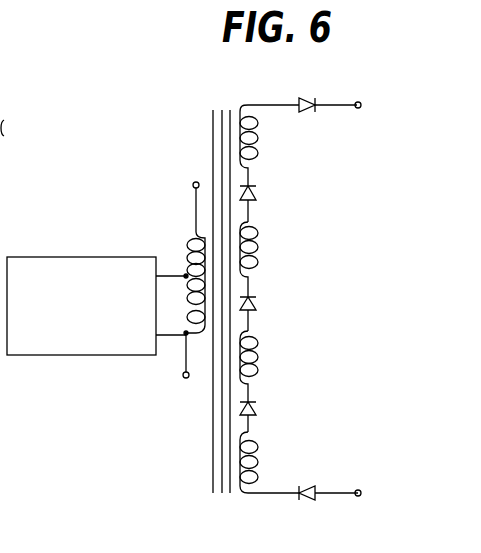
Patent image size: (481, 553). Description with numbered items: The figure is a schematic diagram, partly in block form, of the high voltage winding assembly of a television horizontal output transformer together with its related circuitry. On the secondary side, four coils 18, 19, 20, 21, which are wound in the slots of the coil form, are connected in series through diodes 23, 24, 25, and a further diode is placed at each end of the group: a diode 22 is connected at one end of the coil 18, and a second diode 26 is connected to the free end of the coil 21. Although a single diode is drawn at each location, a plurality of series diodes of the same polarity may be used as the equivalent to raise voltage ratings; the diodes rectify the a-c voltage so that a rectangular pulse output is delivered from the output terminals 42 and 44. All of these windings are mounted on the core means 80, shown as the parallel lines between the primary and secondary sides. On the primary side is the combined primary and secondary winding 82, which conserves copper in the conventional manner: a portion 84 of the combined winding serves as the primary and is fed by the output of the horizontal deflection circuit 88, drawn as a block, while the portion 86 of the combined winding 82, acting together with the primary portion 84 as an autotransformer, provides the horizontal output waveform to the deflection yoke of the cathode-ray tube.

The coil 18 is at (258, 150).
The coil 19 is at (258, 250).
The coil 20 is at (258, 357).
The coil 21 is at (258, 465).
The diode 22 is at (311, 97).
The diode 23 is at (257, 196).
The diode 24 is at (257, 305).
The diode 25 is at (258, 410).
The diode 26 is at (311, 500).
The output terminal 42 is at (358, 101).
The output terminal 44 is at (358, 490).
The core means 80 is at (212, 136).
The combined primary and secondary winding 82 is at (183, 221).
The portion of the combined winding 84 is at (196, 318).
The portion of the combined winding 86 is at (189, 245).
The horizontal deflection circuit 88 is at (75, 355).